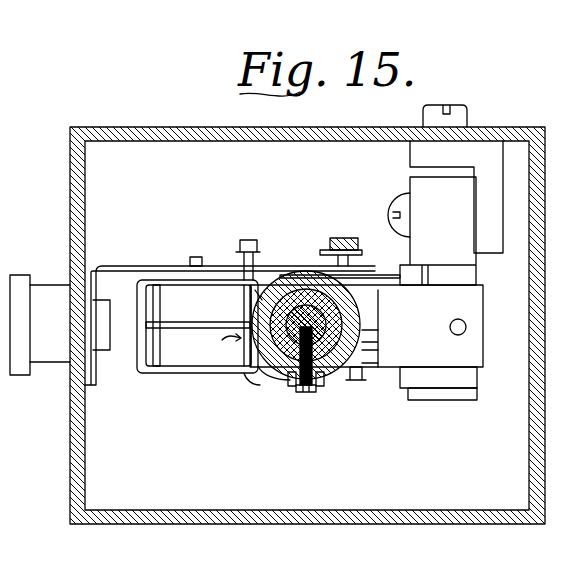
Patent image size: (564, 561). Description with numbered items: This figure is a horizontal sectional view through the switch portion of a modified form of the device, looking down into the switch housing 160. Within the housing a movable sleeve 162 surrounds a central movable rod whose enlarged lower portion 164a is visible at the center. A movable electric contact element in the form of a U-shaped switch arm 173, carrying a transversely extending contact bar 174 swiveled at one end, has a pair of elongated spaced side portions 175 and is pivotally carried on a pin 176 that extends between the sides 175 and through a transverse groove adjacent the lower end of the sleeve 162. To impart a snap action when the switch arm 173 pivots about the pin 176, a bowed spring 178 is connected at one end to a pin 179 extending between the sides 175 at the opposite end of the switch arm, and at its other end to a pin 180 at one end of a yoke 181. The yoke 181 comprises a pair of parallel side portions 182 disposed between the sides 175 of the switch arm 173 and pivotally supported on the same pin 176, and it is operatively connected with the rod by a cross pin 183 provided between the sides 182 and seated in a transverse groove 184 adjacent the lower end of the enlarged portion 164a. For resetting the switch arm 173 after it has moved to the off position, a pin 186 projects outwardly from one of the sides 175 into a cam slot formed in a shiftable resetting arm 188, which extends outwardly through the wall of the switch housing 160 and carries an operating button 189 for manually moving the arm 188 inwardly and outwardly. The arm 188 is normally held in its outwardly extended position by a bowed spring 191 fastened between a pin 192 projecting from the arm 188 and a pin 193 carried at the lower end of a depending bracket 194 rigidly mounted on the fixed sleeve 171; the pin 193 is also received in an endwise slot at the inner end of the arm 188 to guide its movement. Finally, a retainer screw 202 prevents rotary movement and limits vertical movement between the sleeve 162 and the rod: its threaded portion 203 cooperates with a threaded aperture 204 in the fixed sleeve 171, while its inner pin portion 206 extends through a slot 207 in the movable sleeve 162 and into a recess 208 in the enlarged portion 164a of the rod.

The switch housing 160 is at (130, 127).
The operating button 189 is at (53, 348).
The resetting arm 188 is at (122, 266).
The pin 186 is at (194, 257).
The side portions 175 is at (204, 281).
The bowed spring 178 is at (160, 320).
The pin 179 is at (160, 330).
The pin 180 is at (244, 313).
The yoke 181 is at (216, 349).
The switch arm 173 is at (178, 380).
The pin 192 is at (252, 238).
The movable sleeve 162 is at (362, 299).
The enlarged lower portion 164a is at (362, 314).
The recess 208 is at (378, 330).
The inner pin portion 206 is at (378, 345).
The slot 207 is at (372, 355).
The retainer screw 202 is at (314, 398).
The threaded portion 203 is at (300, 392).
The threaded aperture 204 is at (322, 386).
The fixed sleeve 171 is at (272, 392).
The transverse groove 184 is at (247, 378).
The side portions 182 is at (258, 300).
The cross pin 183 is at (288, 275).
The pin 176 is at (346, 380).
The depending bracket 194 is at (346, 233).
The bowed spring 191 is at (326, 248).
The pin 193 is at (400, 265).
The contact bar 174 is at (470, 271).